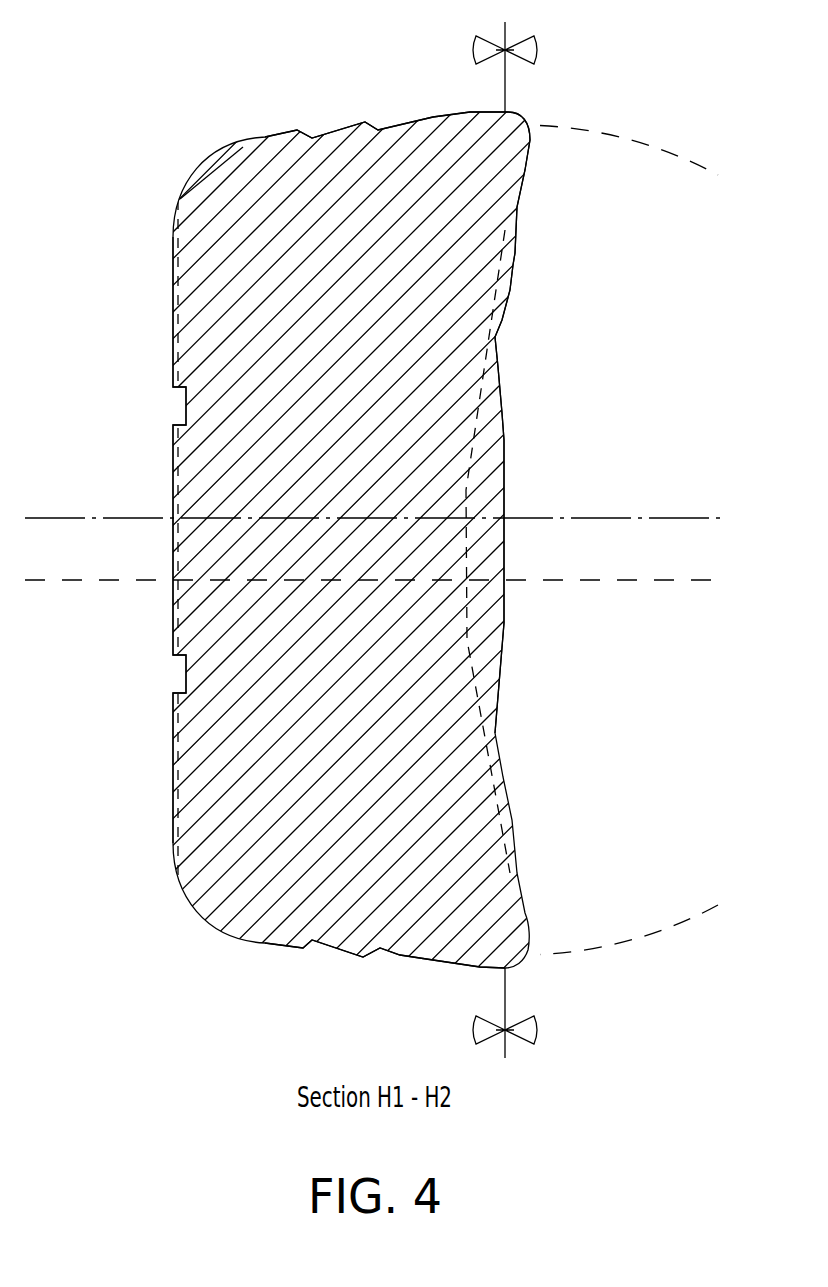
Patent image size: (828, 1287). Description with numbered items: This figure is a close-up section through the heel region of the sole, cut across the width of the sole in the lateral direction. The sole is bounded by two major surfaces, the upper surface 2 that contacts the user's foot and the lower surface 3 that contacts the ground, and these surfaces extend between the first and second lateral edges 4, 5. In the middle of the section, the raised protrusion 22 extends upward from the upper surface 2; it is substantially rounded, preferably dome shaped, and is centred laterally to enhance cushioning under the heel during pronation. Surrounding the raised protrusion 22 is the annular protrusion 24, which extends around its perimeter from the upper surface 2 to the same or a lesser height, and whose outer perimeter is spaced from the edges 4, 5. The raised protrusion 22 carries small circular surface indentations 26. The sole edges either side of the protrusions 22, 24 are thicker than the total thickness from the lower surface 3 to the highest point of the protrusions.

The upper surface 2 is at (524, 177).
The lower surface 3 is at (172, 273).
The first lateral edge 4 is at (432, 116).
The second lateral edge 5 is at (433, 962).
The raised protrusion 22 is at (502, 380).
The annular protrusion 24 is at (515, 287).
The surface indentations 26 is at (510, 483).